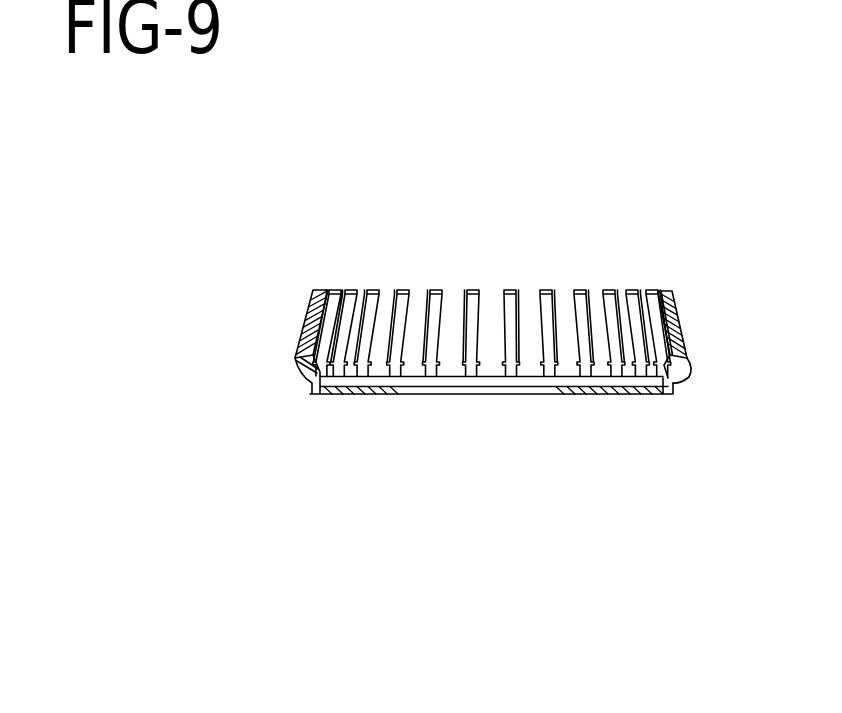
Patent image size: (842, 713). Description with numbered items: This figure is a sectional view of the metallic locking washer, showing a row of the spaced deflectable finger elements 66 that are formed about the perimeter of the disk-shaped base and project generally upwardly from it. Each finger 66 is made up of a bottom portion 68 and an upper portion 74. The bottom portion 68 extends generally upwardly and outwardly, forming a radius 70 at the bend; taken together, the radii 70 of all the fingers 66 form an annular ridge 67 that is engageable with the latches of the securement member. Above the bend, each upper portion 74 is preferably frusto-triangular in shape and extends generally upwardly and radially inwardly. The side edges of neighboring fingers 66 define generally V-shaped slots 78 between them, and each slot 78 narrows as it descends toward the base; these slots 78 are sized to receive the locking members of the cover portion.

The deflectable finger element 66 is at (308, 312).
The annular ridge 67 is at (296, 364).
The bottom portion 68 is at (473, 368).
The radius 70 is at (690, 380).
The upper portion 74 is at (578, 312).
The V-shaped slot 78 is at (453, 312).